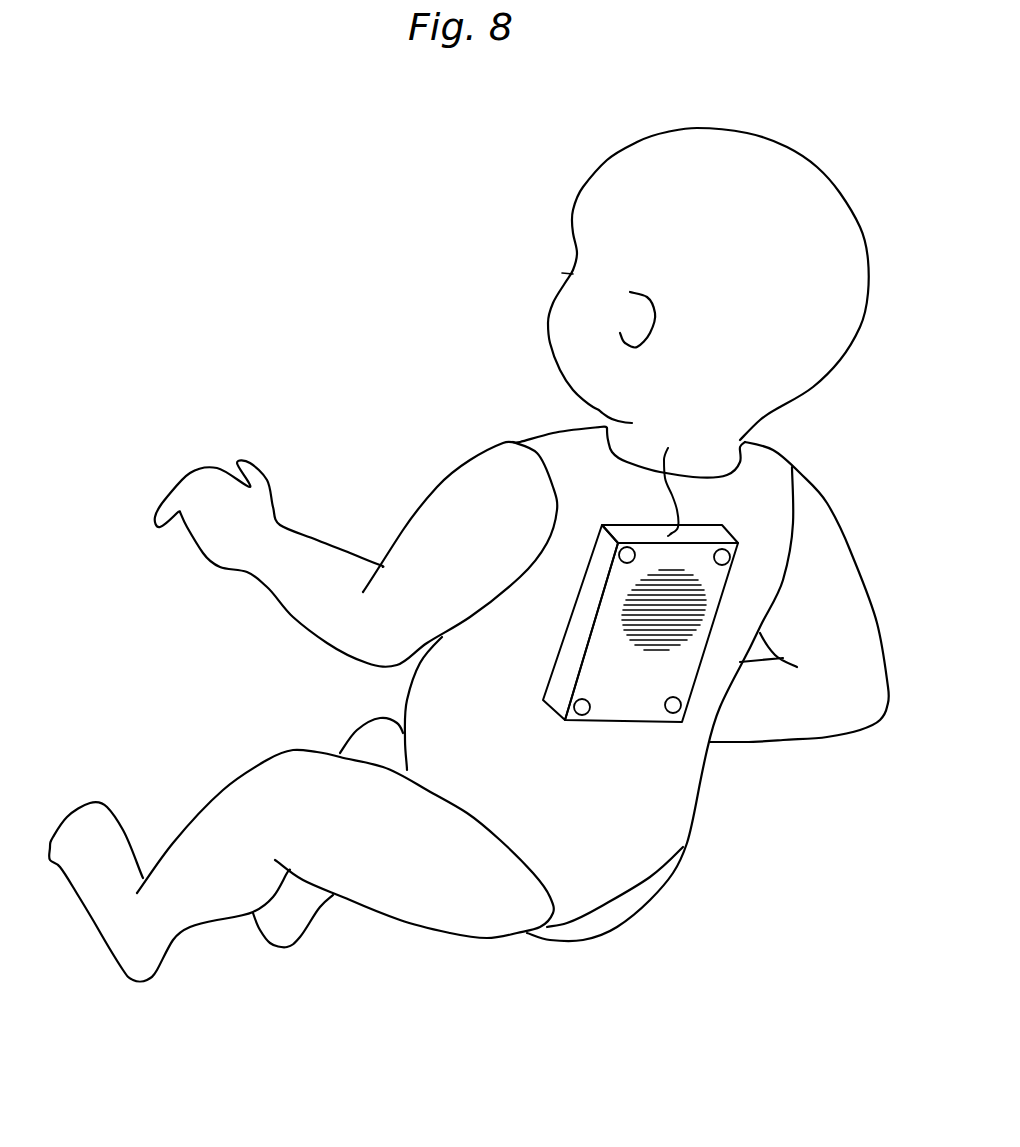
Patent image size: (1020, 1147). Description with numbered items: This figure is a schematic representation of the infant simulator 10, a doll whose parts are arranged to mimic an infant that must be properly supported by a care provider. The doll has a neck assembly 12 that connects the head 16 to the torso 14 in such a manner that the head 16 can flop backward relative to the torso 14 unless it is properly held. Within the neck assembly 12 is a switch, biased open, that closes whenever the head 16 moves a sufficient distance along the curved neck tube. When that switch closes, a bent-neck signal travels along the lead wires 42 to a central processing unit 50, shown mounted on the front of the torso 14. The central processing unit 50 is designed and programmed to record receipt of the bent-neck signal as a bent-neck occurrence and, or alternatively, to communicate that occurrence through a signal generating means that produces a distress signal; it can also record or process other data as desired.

The infant simulator 10 is at (395, 373).
The neck assembly 12 is at (717, 420).
The torso 14 is at (551, 784).
The head 16 is at (793, 235).
The lead wires 42 is at (668, 507).
The central processing unit 50 is at (653, 690).